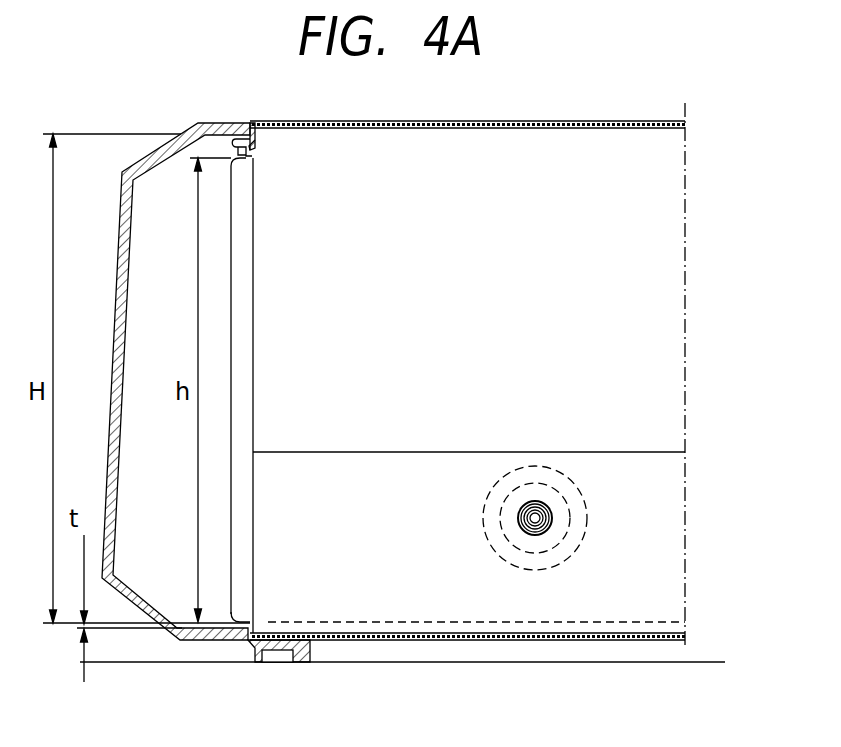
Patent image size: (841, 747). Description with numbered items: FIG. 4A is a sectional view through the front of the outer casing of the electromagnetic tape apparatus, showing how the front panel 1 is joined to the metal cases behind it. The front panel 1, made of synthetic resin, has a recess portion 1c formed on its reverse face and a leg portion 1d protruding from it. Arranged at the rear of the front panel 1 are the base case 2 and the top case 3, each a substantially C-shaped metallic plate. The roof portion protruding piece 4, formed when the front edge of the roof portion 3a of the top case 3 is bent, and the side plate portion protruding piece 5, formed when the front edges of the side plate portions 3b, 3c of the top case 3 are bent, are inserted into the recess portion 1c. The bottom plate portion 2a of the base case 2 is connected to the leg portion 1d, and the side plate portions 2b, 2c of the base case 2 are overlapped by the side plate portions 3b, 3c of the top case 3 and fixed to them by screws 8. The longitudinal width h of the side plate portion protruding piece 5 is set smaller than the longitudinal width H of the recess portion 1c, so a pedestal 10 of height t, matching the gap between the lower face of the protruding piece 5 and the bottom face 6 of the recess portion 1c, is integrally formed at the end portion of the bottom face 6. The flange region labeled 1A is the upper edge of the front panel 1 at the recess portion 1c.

The front panel 1 is at (116, 331).
The flange of case 1A is at (233, 122).
The recess portion 1c is at (179, 306).
The leg portion 1d is at (254, 659).
The base case 2 is at (583, 653).
The bottom plate portion 2a is at (445, 642).
The side plate portion 2b is at (514, 542).
The side plate portion 2c is at (652, 512).
The top case 3 is at (695, 231).
The roof portion 3a is at (483, 128).
The side plate portion 3b is at (514, 305).
The side plate portion 3c is at (650, 342).
The roof portion protruding piece 4 is at (253, 177).
The side plate portion protruding piece 5 is at (237, 530).
The bottom face 6 is at (216, 612).
The screw 8 is at (518, 515).
The pedestal 10 is at (273, 622).